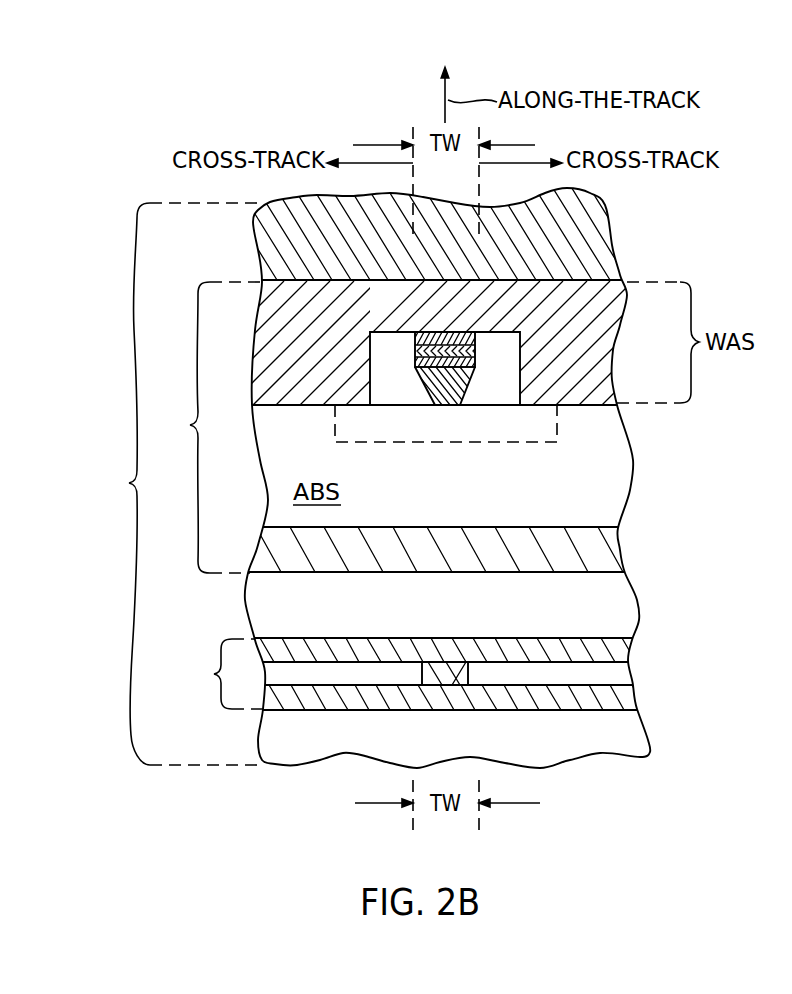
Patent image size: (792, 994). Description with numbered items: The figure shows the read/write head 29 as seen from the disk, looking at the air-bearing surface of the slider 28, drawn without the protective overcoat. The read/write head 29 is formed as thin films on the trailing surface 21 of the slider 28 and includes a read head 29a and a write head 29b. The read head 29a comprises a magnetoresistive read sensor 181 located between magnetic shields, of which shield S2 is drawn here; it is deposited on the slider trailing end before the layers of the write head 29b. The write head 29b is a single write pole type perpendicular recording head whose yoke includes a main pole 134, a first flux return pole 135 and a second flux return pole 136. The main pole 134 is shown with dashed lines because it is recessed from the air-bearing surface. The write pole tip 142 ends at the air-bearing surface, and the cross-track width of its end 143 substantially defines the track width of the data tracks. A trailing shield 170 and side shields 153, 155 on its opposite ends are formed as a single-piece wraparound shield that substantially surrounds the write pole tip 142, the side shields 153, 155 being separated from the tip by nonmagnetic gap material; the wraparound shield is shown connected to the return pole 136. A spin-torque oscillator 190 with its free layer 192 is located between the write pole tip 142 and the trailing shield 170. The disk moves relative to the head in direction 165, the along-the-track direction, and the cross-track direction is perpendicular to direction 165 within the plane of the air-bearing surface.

The along-the-track direction arrow 165 is at (447, 83).
The second flux return pole 136 is at (585, 232).
The trailing magnetic shield 170 is at (570, 280).
The side shield 155 is at (273, 310).
The side shield 153 is at (607, 342).
The spin-torque oscillator (STO) 190 is at (412, 333).
The free layer 192 is at (470, 350).
The write pole tip 142 is at (465, 378).
The end of write pole tip 143 is at (448, 395).
The main pole 134 is at (525, 433).
The first flux return pole 135 is at (593, 545).
The slider 28 is at (637, 588).
The magnetic shield S2 is at (620, 652).
The magnetoresistive read sensor 181 is at (473, 675).
The trailing surface 21 is at (603, 712).
The read/write head 29 is at (177, 484).
The write head 29b is at (204, 427).
The read head 29a is at (218, 674).